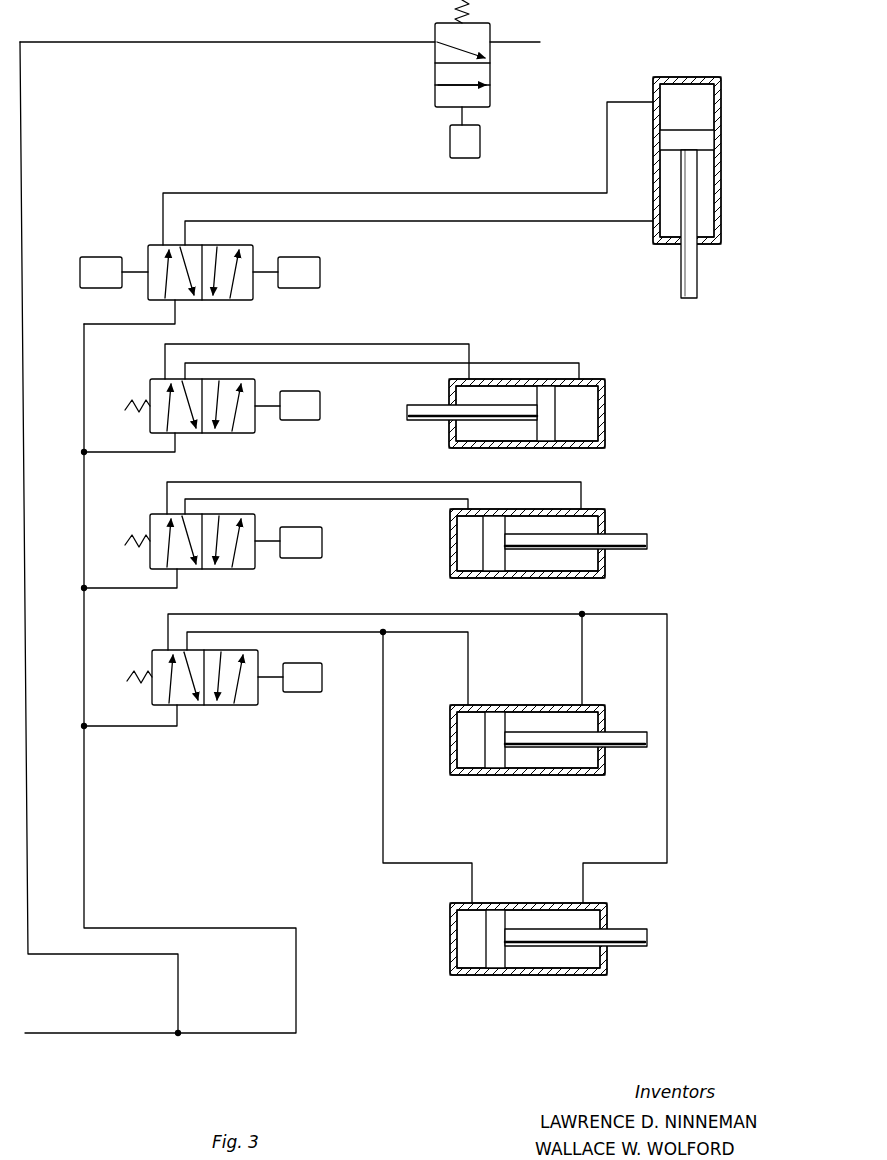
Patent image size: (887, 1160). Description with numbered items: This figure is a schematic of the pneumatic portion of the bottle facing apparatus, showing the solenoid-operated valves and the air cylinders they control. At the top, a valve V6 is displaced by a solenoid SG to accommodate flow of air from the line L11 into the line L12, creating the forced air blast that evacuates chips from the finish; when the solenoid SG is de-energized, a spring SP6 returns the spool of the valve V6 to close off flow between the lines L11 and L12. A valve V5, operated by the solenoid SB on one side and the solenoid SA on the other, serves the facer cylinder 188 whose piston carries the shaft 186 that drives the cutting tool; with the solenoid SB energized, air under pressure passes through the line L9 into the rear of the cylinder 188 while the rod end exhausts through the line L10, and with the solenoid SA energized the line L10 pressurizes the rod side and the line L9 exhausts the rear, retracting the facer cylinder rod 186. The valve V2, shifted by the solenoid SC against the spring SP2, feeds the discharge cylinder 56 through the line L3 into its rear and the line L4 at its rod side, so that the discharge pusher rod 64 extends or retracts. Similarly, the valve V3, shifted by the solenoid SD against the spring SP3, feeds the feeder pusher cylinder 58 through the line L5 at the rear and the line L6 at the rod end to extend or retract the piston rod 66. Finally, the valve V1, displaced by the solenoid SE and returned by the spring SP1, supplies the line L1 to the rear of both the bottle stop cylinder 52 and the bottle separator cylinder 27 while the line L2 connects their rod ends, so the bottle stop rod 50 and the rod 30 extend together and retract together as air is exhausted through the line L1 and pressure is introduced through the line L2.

The spring SP6 is at (470, 9).
The air line L11 is at (283, 40).
The air line L12 is at (540, 42).
The valve V6 is at (435, 98).
The solenoid SG is at (465, 141).
The air line L9 is at (556, 178).
The air line L10 is at (604, 221).
The facer cylinder 188 is at (721, 168).
The shaft 186 is at (697, 230).
The solenoid SB is at (114, 272).
The solenoid SA is at (286, 272).
The valve V5 is at (230, 300).
The air line L4 is at (362, 344).
The air line L3 is at (397, 364).
The spring SP2 is at (130, 406).
The valve V2 is at (225, 433).
The solenoid SC is at (287, 405).
The discharge pusher rod 64 is at (409, 412).
The discharge cylinder 56 is at (452, 448).
The air line L6 is at (354, 482).
The air line L5 is at (410, 500).
The spring SP3 is at (130, 541).
The valve V3 is at (230, 569).
The solenoid SD is at (288, 542).
The piston rod 66 is at (647, 543).
The feeder pusher cylinder 58 is at (600, 578).
The air line L2 is at (397, 613).
The air line L1 is at (383, 656).
The spring SP1 is at (130, 677).
The valve V1 is at (225, 705).
The solenoid SE is at (290, 677).
The bottle stop rod 50 is at (645, 748).
The bottle stop cylinder 52 is at (585, 775).
The rod 30 is at (647, 937).
The bottle separator cylinder 27 is at (597, 975).